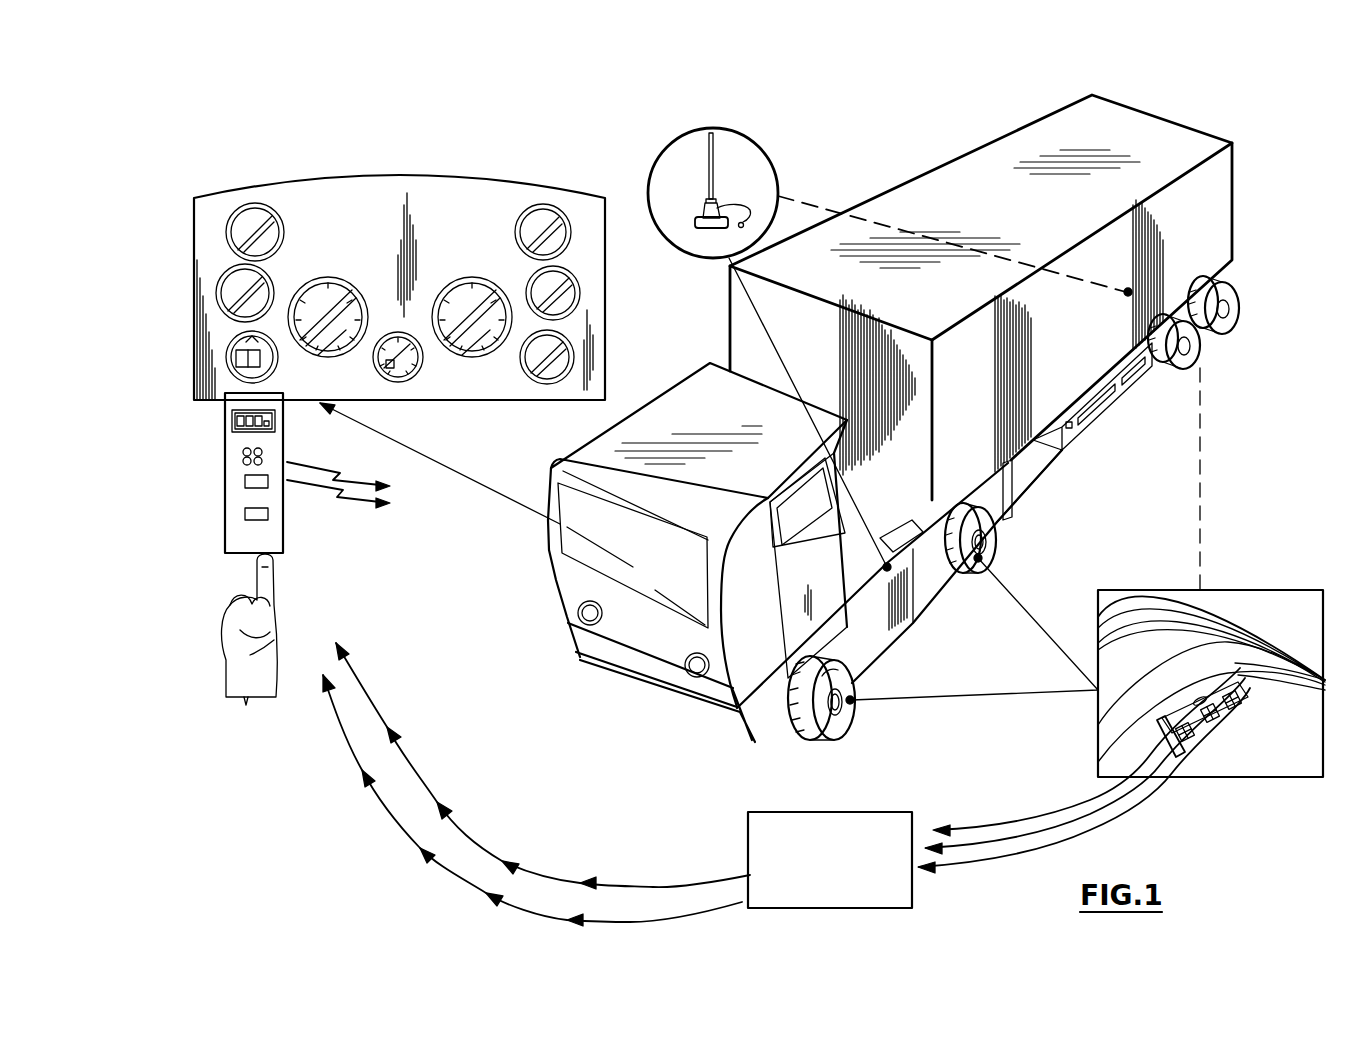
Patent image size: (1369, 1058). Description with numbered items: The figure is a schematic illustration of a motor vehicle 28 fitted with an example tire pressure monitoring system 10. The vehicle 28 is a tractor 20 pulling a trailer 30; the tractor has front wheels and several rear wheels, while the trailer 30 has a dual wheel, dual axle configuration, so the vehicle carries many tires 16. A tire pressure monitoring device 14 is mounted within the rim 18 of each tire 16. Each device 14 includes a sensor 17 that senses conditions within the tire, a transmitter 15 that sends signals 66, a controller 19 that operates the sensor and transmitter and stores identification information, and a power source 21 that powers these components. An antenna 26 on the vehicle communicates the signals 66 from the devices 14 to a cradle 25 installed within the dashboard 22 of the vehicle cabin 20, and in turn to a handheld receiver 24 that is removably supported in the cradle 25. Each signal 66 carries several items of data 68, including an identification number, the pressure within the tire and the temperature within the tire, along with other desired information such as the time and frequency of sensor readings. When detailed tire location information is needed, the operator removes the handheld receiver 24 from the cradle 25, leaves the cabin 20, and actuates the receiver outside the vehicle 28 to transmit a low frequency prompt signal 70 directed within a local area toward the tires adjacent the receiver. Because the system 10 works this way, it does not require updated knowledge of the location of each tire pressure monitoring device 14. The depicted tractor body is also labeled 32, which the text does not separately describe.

The tire pressure monitoring system 10 is at (868, 108).
The tire pressure monitoring device 14 is at (820, 726).
The transmitter 15 is at (1183, 745).
The tire 16 is at (850, 712).
The sensor 17 is at (1212, 722).
The rim 18 is at (1205, 635).
The controller 19 is at (1235, 712).
The vehicle cabin 20 is at (635, 620).
The power source 21 is at (1237, 723).
The dashboard 22 is at (485, 401).
The handheld receiver 24 is at (283, 497).
The cradle 25 is at (222, 383).
The antenna 26 is at (718, 184).
The vehicle 28 is at (612, 755).
The trailer 30 is at (1143, 150).
The tractor 32 is at (805, 516).
The signal 66 is at (966, 883).
The data 68 is at (800, 908).
The prompt signal 70 is at (346, 509).